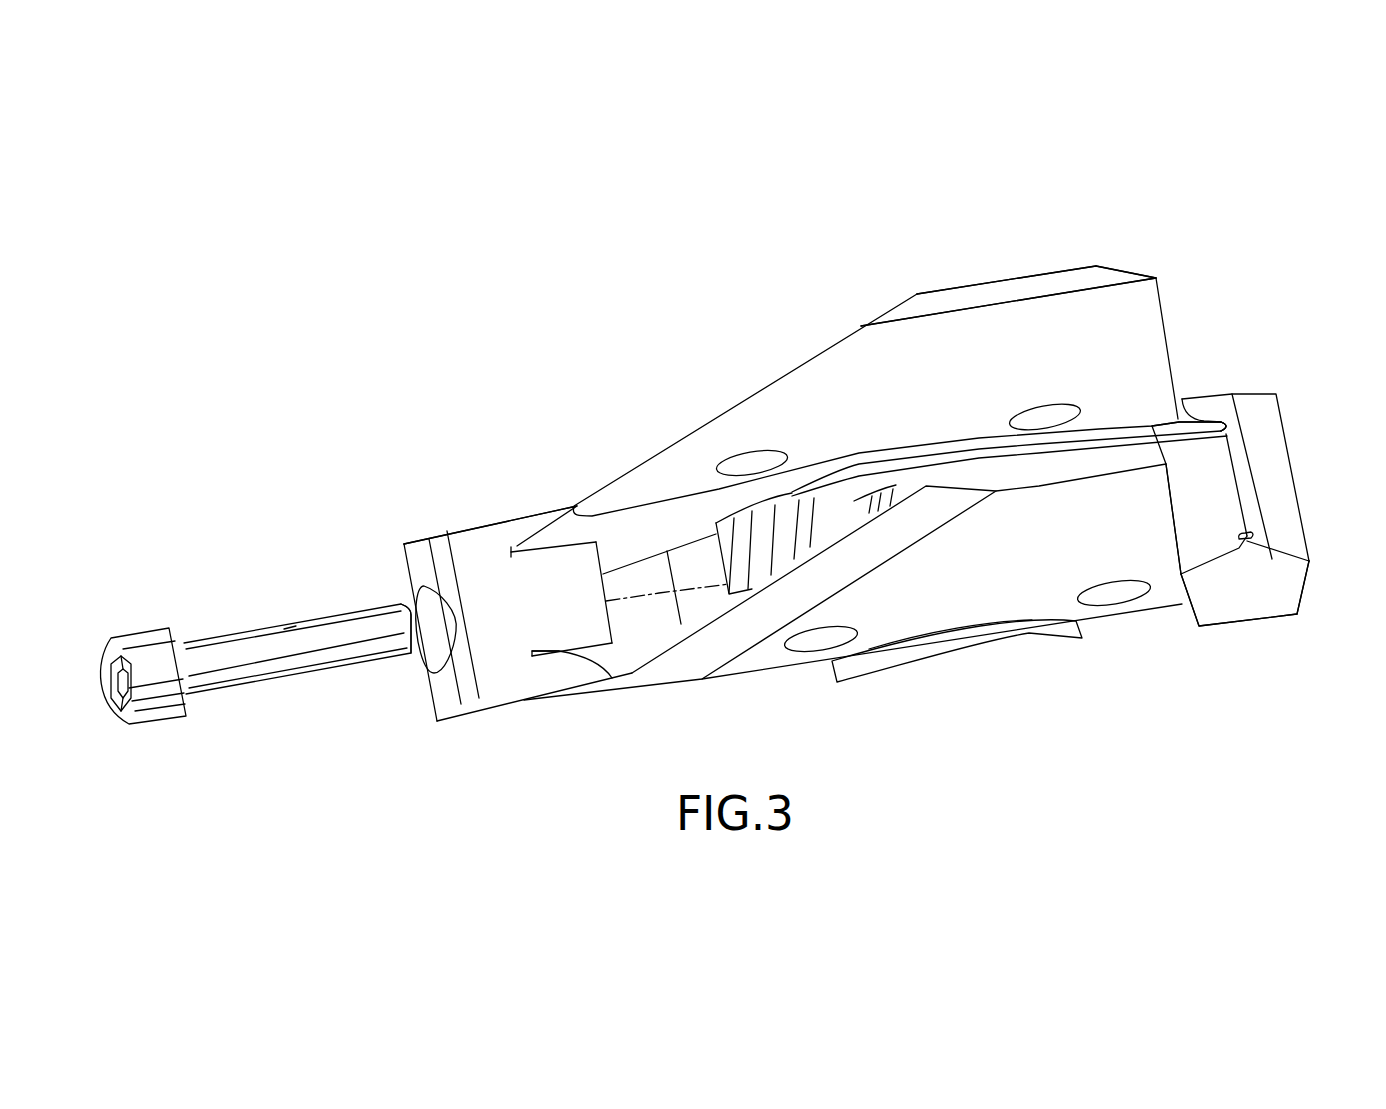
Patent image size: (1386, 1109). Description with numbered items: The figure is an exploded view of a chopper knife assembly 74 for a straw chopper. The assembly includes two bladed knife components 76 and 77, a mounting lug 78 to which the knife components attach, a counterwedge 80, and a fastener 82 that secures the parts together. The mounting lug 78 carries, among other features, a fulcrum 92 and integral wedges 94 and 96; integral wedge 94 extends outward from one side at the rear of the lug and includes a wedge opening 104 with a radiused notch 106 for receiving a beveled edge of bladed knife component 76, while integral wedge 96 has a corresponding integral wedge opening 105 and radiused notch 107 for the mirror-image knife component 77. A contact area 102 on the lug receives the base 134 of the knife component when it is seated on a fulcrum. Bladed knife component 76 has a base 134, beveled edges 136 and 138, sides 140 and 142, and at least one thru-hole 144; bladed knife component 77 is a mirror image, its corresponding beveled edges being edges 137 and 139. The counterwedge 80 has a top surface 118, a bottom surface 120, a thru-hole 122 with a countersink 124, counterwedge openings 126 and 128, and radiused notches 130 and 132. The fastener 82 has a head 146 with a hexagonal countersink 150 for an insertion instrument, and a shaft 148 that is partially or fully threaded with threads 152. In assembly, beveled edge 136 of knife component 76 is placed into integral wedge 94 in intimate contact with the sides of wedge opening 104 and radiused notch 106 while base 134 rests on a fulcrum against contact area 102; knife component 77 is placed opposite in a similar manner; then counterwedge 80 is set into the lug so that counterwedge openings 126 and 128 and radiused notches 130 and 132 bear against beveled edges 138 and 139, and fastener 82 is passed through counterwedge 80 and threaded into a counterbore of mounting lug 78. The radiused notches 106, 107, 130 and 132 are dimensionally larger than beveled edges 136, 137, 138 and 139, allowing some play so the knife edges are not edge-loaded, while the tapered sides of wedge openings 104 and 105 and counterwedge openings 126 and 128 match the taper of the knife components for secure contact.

The chopper knife assembly 74 is at (478, 384).
The bladed knife component 76 is at (1102, 278).
The bladed knife component 77 is at (1240, 441).
The mounting lug 78 is at (1263, 405).
The counterwedge 80 is at (460, 537).
The fastener 82 is at (237, 640).
The fulcrum 92 is at (908, 657).
The integral wedge 94 is at (1212, 413).
The integral wedge 96 is at (1240, 555).
The contact area 102 is at (905, 480).
The wedge opening 104 is at (1198, 423).
The integral wedge opening 105 is at (1250, 540).
The radiused notch 106 is at (1223, 403).
The radiused notch 107 is at (1255, 535).
The top surface 118 is at (497, 667).
The bottom surface 120 is at (430, 720).
The thru-hole 122 is at (425, 712).
The countersink 124 is at (437, 653).
The counterwedge opening 126 is at (533, 542).
The counterwedge opening 128 is at (557, 652).
The radiused notch 130 is at (513, 548).
The radiused notch 132 is at (543, 655).
The base 134 is at (694, 492).
The beveled edge 136 is at (1165, 298).
The beveled edge 137 is at (1240, 497).
The beveled edge 138 is at (677, 453).
The beveled edge 139 is at (757, 597).
The side 140 is at (1008, 279).
The side 142 is at (1022, 301).
The thru-hole 144 is at (727, 457).
The head 146 is at (140, 630).
The shaft 148 is at (310, 618).
The hexagonal countersink 150 is at (122, 687).
The threads 152 is at (348, 612).